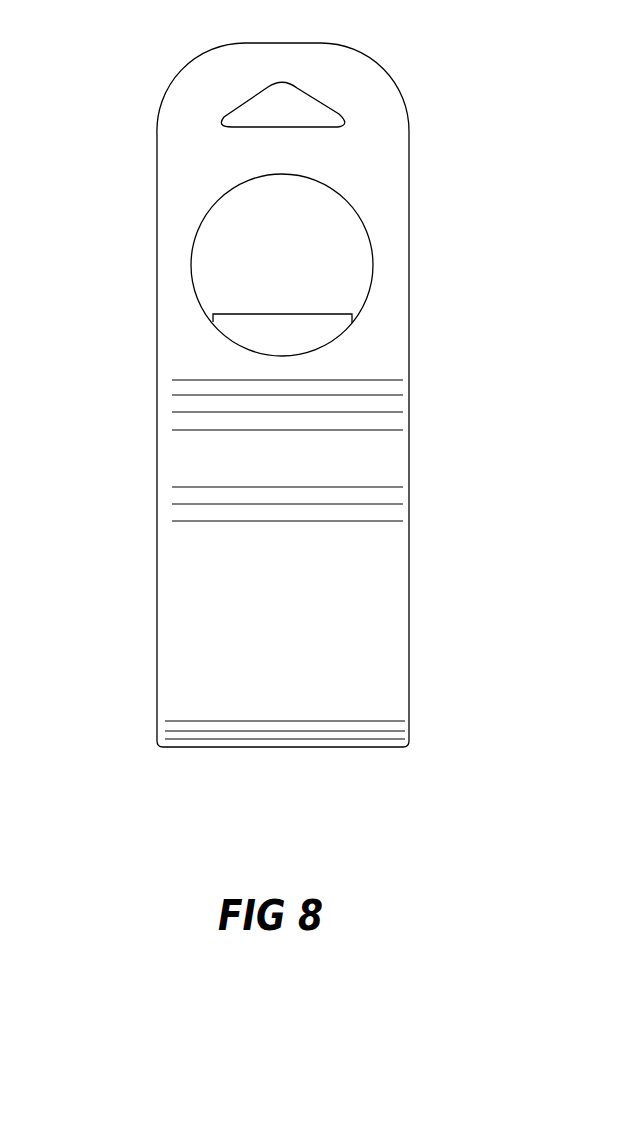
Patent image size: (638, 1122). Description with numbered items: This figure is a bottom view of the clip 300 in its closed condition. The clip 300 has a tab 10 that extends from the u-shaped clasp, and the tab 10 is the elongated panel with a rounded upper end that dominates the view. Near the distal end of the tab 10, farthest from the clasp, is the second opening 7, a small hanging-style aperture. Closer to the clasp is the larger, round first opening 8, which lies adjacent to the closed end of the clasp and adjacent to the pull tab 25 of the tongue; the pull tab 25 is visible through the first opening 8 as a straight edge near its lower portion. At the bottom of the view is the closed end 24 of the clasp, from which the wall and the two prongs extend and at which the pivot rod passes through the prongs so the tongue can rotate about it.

The clip 300 is at (210, 42).
The second opening 7 is at (283, 102).
The tab 10 is at (357, 164).
The first opening 8 is at (325, 240).
The pull tab 25 is at (297, 312).
The closed end 24 is at (357, 731).